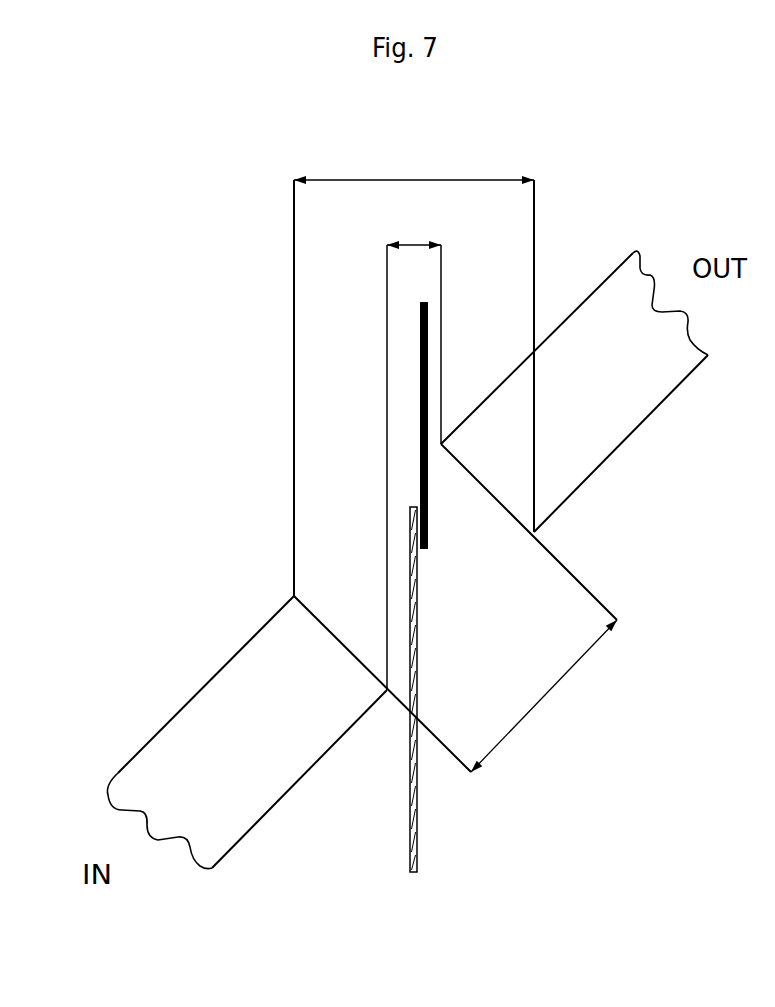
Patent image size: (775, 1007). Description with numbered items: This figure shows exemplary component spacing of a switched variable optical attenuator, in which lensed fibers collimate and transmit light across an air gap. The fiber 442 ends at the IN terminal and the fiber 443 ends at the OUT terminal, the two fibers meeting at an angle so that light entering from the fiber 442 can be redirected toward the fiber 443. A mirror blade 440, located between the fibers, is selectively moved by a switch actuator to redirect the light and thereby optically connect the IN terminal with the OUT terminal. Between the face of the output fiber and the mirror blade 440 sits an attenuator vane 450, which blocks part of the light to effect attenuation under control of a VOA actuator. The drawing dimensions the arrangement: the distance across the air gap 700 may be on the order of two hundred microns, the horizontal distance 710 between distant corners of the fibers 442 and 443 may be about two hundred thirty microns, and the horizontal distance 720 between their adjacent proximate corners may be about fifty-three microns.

The mirror blade 440 is at (399, 853).
The fiber 442 is at (181, 694).
The fiber 443 is at (676, 401).
The attenuator vane 450 is at (440, 316).
The air gap 700 is at (544, 696).
The horizontal distance 710 is at (414, 167).
The horizontal distance 720 is at (414, 231).